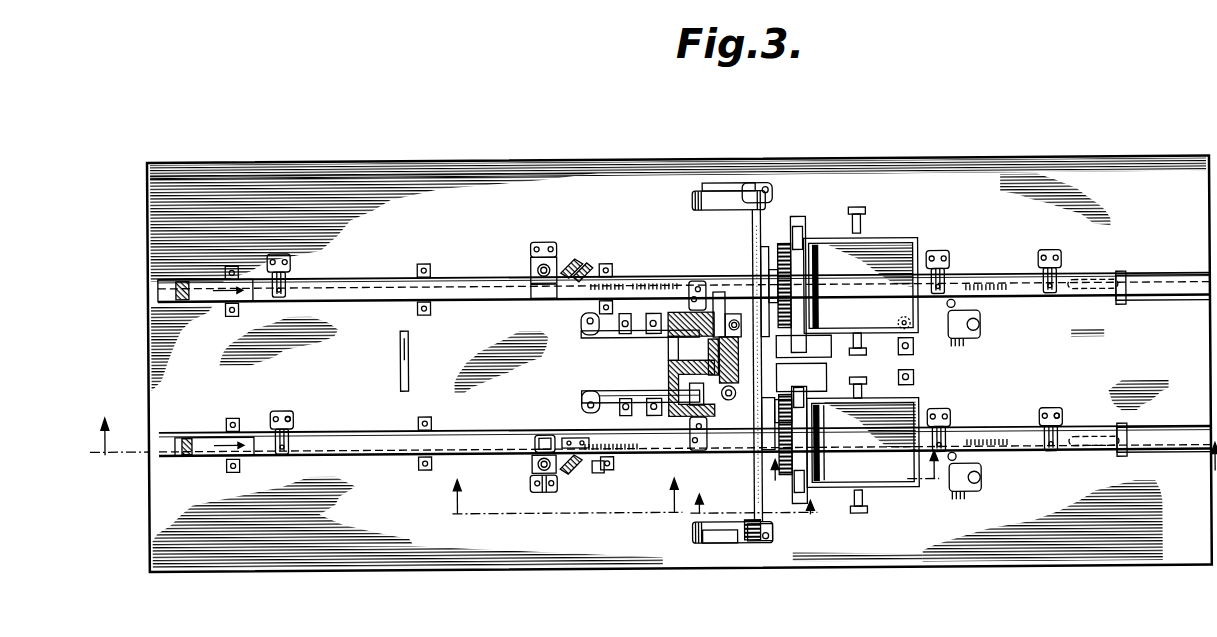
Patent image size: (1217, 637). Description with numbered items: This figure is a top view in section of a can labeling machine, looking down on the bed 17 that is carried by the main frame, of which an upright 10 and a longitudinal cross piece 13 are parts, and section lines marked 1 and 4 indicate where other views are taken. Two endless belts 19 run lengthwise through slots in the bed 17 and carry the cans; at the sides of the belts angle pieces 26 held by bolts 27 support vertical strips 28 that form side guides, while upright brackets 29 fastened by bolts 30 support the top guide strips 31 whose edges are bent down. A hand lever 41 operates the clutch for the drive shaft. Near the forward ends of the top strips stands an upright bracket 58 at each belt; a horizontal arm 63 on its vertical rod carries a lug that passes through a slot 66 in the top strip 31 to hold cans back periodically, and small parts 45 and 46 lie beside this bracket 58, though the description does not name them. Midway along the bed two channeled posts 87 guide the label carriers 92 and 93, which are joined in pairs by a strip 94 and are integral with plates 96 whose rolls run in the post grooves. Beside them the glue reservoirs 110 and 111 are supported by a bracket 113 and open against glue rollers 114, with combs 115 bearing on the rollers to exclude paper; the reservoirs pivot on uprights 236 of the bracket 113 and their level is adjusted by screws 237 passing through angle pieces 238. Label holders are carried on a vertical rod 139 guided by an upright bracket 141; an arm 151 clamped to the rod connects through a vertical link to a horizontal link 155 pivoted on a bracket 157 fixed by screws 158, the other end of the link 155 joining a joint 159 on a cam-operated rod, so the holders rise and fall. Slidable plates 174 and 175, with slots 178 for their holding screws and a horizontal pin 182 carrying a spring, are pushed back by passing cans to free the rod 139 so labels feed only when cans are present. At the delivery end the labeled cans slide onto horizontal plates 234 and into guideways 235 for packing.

The section line 1- 1 is at (653, 457).
The section line 4- 4 is at (567, 505).
The upright 10 is at (754, 514).
The longitudinal cross piece 13 is at (851, 482).
The bed 17 is at (445, 164).
The endless belt 19 is at (200, 444).
The angle piece 26 is at (432, 432).
The bolt 27 is at (423, 418).
The vertical parallel strip 28 is at (357, 436).
The upright bracket 29 is at (291, 266).
The bolt 30 is at (288, 413).
The top guide strip 31 is at (385, 290).
The hand lever 41 is at (408, 352).
The link 45 is at (566, 477).
The link block 46 is at (596, 476).
The upright bracket 58 is at (530, 250).
The horizontal arm 63 is at (536, 440).
The slot 66 is at (544, 441).
The post 87 is at (723, 187).
The label carrier 92 is at (760, 471).
The label carrier 93 is at (764, 258).
The strip 94 is at (761, 342).
The plate 96 is at (760, 491).
The glue reservoir 110 is at (898, 492).
The glue reservoir 111 is at (912, 242).
The bracket 113 is at (910, 360).
The glue roller 114 is at (826, 312).
The comb 115 is at (828, 416).
The vertical rod 139 is at (735, 394).
The upright bracket 141 is at (672, 364).
The arm 151 is at (687, 388).
The horizontal link 155 is at (612, 396).
The bracket 157 is at (640, 416).
The screw 158 is at (620, 326).
The joint 159 is at (580, 404).
The plate 174 is at (713, 448).
The plate 175 is at (714, 298).
The slot 178 is at (732, 297).
The horizontal pin 182 is at (708, 366).
The horizontal plate 234 is at (1143, 282).
The guideway 235 is at (1145, 434).
The upright 236 is at (862, 218).
The screw 237 is at (912, 378).
The angle piece 238 is at (912, 385).